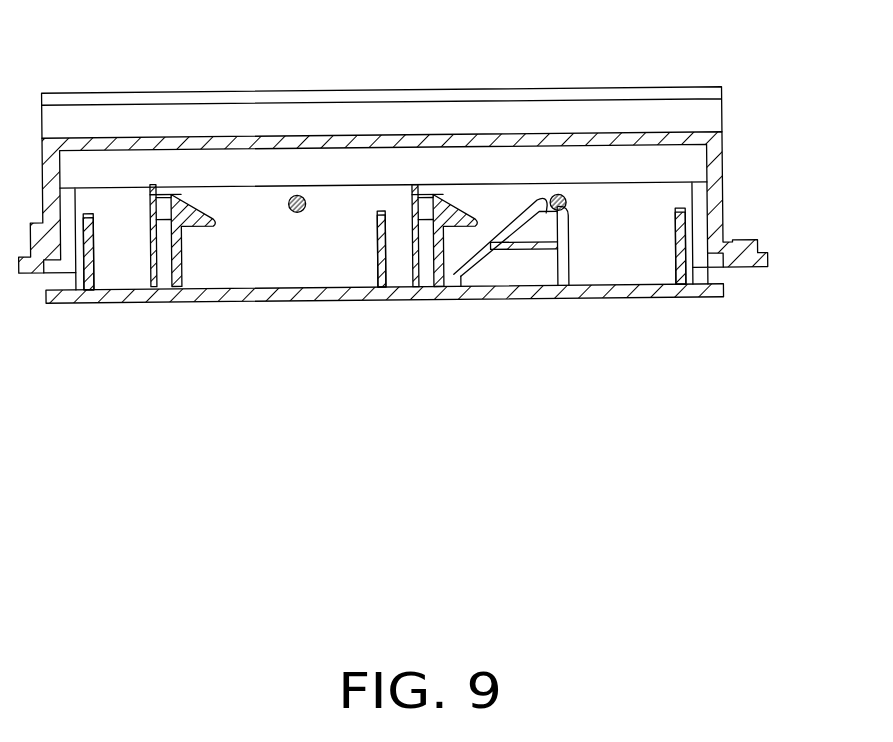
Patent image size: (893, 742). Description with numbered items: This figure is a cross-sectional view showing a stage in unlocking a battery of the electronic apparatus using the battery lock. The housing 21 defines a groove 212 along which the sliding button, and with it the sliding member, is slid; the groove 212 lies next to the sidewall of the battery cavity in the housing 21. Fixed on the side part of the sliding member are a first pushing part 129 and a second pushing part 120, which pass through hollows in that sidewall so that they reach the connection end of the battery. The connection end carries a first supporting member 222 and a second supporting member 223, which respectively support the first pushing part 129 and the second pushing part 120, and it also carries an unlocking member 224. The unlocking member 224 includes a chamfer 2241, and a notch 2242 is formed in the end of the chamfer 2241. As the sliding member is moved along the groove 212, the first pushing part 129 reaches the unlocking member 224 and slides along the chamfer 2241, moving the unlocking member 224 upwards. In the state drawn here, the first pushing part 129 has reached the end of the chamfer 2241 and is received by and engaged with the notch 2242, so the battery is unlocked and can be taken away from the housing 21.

The housing 21 is at (713, 203).
The groove 212 is at (680, 162).
The second supporting member 223 is at (167, 192).
The first supporting member 222 is at (460, 197).
The second pushing part 120 is at (295, 196).
The first pushing part 129 is at (566, 196).
The unlocking member 224 is at (568, 255).
The chamfer 2241 is at (513, 213).
The notch 2242 is at (555, 215).